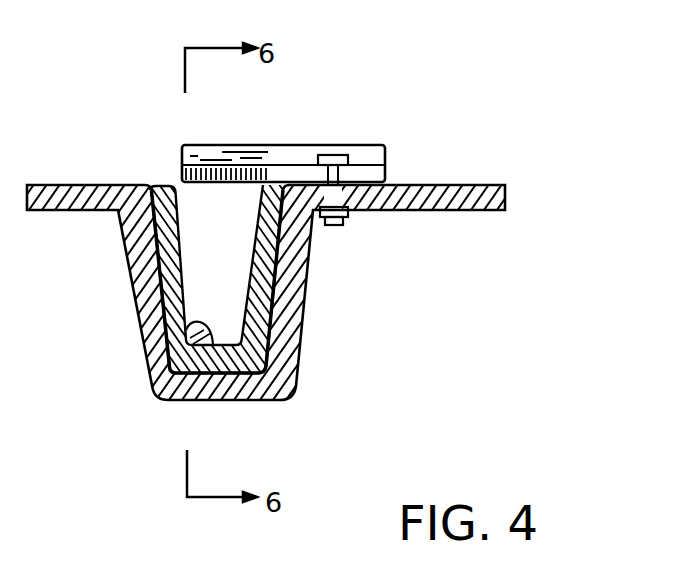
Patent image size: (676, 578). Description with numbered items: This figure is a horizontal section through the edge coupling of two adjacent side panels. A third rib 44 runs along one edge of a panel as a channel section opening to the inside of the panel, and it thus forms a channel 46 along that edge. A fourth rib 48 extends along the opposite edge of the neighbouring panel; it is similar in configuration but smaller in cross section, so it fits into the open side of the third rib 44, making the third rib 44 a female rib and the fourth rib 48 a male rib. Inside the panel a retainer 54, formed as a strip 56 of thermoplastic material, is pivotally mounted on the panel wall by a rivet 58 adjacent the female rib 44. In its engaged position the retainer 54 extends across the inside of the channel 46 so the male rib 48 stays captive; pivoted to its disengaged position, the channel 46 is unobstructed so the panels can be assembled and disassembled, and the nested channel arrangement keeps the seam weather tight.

The third rib 44 is at (292, 402).
The channel 46 is at (142, 338).
The fourth rib 48 is at (167, 272).
The retainer 54 is at (290, 136).
The strip 56 is at (385, 158).
The rivet 58 is at (336, 150).